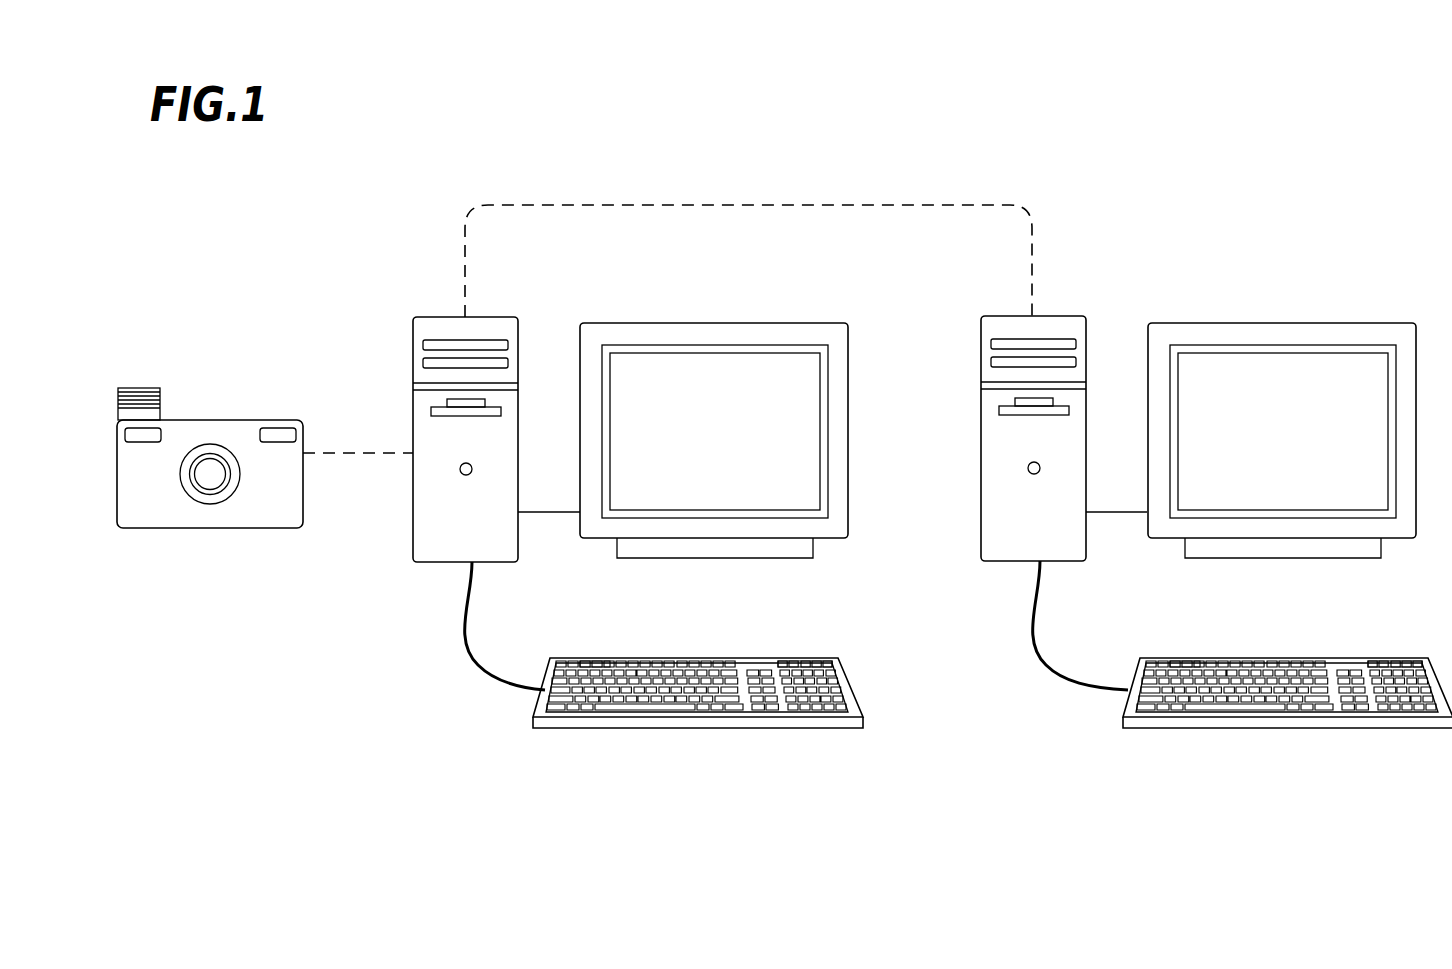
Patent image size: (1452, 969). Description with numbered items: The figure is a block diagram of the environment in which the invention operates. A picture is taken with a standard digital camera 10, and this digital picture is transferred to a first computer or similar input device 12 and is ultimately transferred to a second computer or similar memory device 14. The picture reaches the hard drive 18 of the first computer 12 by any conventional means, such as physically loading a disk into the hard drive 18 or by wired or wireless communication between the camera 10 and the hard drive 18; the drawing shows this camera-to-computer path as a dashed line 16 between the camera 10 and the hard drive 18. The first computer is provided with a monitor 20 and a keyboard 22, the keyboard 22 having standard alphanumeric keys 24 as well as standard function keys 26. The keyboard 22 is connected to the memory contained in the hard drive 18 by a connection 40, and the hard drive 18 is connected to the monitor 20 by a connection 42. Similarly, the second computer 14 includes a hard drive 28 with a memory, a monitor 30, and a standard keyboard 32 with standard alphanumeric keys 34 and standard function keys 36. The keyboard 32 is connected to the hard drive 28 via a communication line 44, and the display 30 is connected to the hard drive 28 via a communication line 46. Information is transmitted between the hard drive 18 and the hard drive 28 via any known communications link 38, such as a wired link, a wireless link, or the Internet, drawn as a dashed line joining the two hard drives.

The digital camera 10 is at (195, 528).
The first computer 12 is at (398, 592).
The second computer 14 is at (966, 592).
The camera-to-computer connection 16 is at (378, 452).
The hard drive 18 is at (413, 510).
The monitor 20 is at (758, 323).
The keyboard 22 is at (710, 728).
The alphanumeric keys 24 is at (596, 658).
The function keys 26 is at (800, 658).
The hard drive 28 is at (982, 510).
The monitor 30 is at (1328, 323).
The keyboard 32 is at (1297, 728).
The alphanumeric keys 34 is at (1183, 658).
The function keys 36 is at (1388, 658).
The communications link 38 is at (688, 205).
The connection 40 is at (470, 648).
The connection 42 is at (558, 512).
The communication line 44 is at (1038, 648).
The communication line 46 is at (1125, 512).